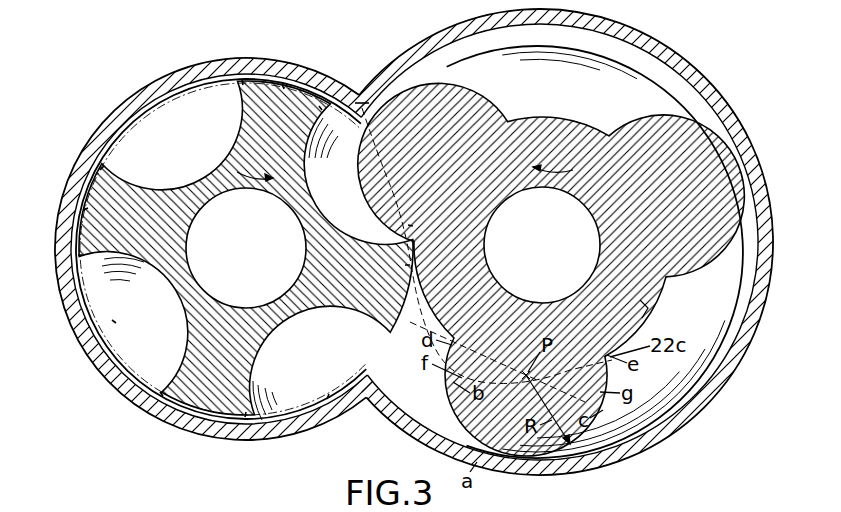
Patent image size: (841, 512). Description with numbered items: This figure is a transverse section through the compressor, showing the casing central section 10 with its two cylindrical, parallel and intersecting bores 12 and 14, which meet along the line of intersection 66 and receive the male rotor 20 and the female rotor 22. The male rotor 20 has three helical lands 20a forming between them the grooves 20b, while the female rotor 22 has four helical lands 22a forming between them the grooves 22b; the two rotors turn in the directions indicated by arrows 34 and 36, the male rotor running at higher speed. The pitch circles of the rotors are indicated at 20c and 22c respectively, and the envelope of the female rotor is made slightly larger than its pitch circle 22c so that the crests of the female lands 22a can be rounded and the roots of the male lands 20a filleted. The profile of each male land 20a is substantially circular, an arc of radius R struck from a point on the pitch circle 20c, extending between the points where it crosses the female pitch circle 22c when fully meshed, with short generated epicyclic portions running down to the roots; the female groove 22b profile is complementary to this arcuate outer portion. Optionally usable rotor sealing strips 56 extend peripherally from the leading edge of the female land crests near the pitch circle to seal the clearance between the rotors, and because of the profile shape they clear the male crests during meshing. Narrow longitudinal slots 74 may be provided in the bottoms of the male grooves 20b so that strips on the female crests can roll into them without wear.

The central section 10 is at (667, 45).
The bore 12 is at (427, 417).
The bore 14 is at (320, 397).
The male rotor 20 is at (540, 118).
The helical lands 20a is at (712, 130).
The grooves 20b is at (677, 390).
The pitch circle 20c is at (647, 317).
The female rotor 22 is at (197, 356).
The helical lands 22a is at (92, 230).
The grooves 22b is at (135, 132).
The pitch circle 22c is at (103, 340).
The arrow 34 is at (554, 157).
The arrow 36 is at (256, 162).
The sealing strip 56 is at (372, 118).
The line of intersection 66 is at (363, 103).
The slots 74 is at (652, 313).